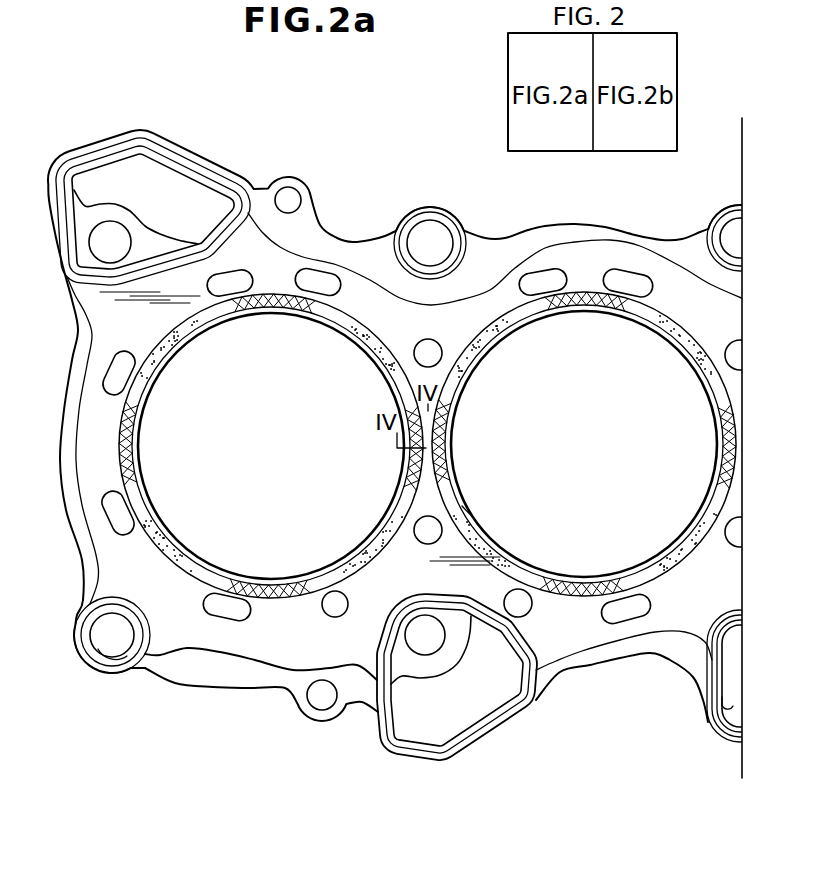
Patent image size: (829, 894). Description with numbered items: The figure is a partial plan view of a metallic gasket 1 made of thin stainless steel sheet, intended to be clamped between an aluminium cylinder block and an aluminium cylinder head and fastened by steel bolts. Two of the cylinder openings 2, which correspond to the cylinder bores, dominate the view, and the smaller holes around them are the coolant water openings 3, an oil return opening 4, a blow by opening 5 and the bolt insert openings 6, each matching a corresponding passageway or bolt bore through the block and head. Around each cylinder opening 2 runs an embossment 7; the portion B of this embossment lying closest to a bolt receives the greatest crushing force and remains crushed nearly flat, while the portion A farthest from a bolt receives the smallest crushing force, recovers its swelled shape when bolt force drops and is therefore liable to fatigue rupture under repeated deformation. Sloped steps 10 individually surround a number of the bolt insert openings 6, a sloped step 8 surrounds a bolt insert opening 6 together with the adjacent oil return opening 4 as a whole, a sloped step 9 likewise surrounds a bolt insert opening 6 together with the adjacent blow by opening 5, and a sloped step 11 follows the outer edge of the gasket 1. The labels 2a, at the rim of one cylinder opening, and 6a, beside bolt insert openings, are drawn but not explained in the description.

The gasket 1 is at (658, 197).
The cylinder openings 2 is at (262, 443).
The bore opening bead ring 2a is at (473, 517).
The coolant water openings 3 is at (421, 341).
The oil return opening 4 is at (439, 721).
The blow by opening 5 is at (169, 216).
The bolt insert openings 6 is at (96, 252).
The bolt hole edge portion 6a is at (108, 648).
The embossment 7 is at (337, 582).
The sloped step 8 is at (383, 693).
The sloped step 9 is at (201, 165).
The sloped steps 10 is at (448, 216).
The sloped step 11 is at (584, 241).
The portion farthest from the bolt A is at (125, 445).
The portion closest to the bolt B is at (368, 338).